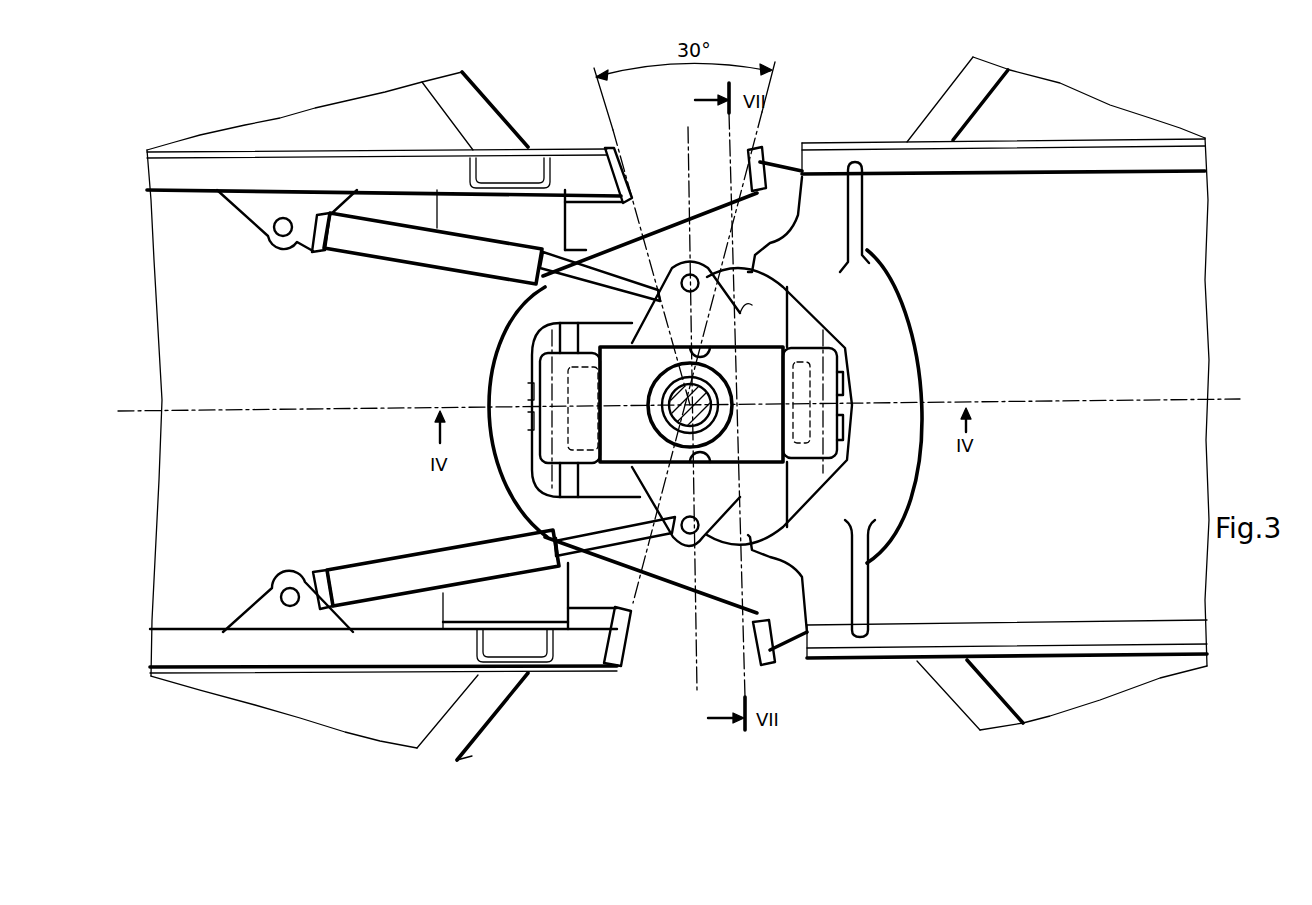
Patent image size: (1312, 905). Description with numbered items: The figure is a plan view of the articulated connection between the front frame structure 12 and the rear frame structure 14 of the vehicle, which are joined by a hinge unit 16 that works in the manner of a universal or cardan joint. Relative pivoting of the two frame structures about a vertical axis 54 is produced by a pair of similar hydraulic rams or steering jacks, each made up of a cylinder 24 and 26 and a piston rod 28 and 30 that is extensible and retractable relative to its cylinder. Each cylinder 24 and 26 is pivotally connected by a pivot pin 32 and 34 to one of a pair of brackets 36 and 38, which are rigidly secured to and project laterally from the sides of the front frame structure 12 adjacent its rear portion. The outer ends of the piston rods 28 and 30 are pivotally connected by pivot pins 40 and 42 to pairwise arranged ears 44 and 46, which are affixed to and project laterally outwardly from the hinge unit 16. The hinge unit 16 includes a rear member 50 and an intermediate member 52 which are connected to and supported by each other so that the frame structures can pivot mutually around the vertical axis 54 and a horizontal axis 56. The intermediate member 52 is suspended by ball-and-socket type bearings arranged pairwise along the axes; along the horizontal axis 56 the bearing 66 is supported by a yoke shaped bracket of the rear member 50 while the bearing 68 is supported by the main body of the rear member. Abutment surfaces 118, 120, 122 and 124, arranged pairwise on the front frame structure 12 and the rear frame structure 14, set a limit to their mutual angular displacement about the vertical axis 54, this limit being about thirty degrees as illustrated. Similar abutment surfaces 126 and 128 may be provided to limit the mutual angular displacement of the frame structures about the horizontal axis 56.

The front frame structure 12 is at (236, 473).
The rear frame structure 14 is at (1128, 566).
The hinge unit 16 is at (737, 592).
The cylinder 24 is at (371, 248).
The cylinder 26 is at (357, 574).
The piston rod 28 is at (622, 280).
The piston rod 30 is at (575, 545).
The pivot pin 32 is at (272, 588).
The pivot pin 34 is at (276, 240).
The bracket 36 is at (316, 622).
The bracket 38 is at (333, 200).
The pivot pin 40 is at (697, 280).
The pivot pin 42 is at (684, 540).
The ears 44 is at (714, 312).
The ears 46 is at (720, 504).
The rear member 50 is at (497, 452).
The intermediate member 52 is at (843, 350).
The vertical axis 54 is at (692, 618).
The horizontal axis 56 is at (1093, 402).
The bearing 66 is at (530, 390).
The bearing 68 is at (843, 458).
The abutment surface 118 is at (616, 158).
The abutment surface 120 is at (755, 170).
The abutment surface 122 is at (618, 667).
The abutment surface 124 is at (768, 654).
The abutment surface 126 is at (626, 522).
The abutment surface 128 is at (733, 460).